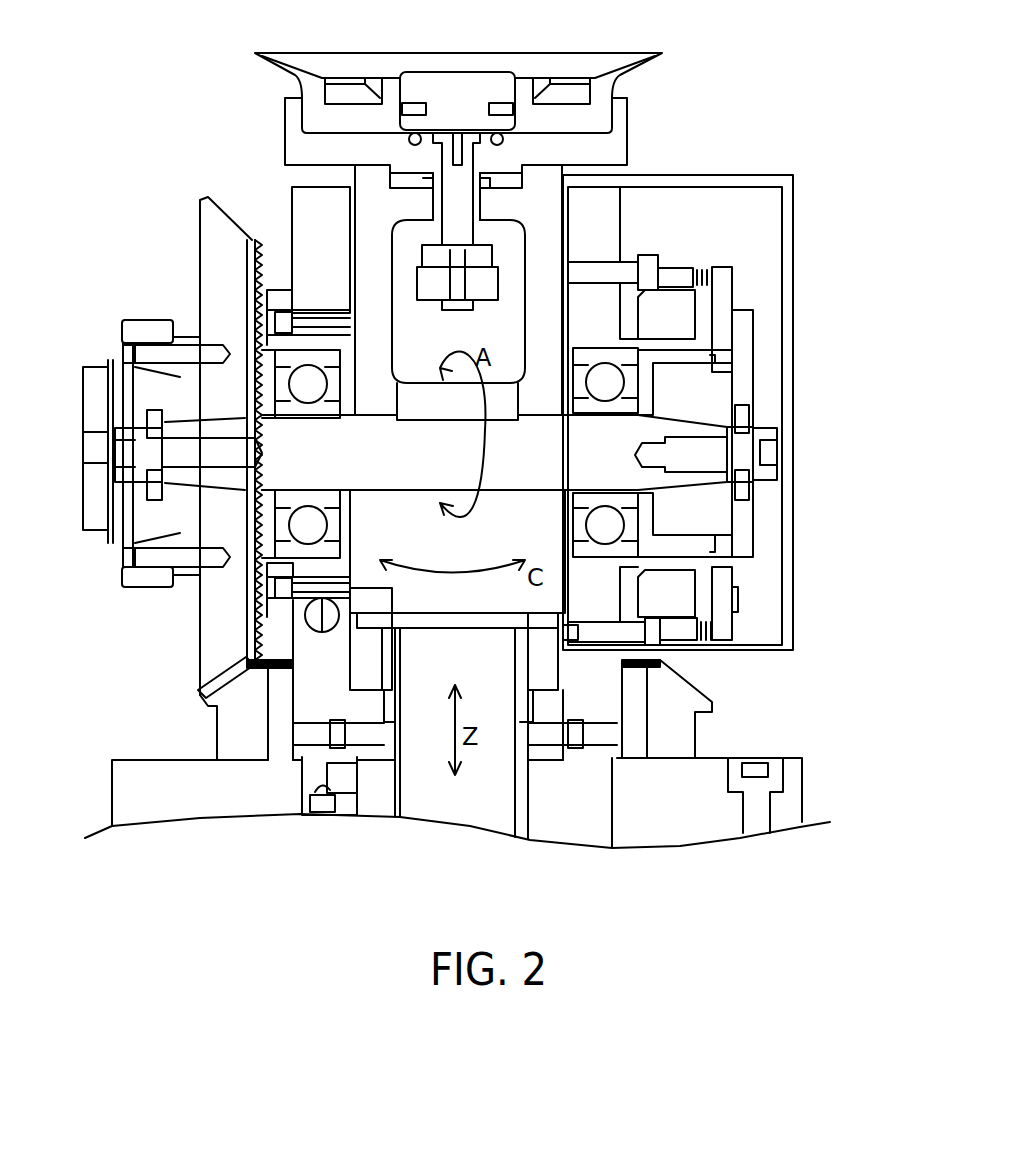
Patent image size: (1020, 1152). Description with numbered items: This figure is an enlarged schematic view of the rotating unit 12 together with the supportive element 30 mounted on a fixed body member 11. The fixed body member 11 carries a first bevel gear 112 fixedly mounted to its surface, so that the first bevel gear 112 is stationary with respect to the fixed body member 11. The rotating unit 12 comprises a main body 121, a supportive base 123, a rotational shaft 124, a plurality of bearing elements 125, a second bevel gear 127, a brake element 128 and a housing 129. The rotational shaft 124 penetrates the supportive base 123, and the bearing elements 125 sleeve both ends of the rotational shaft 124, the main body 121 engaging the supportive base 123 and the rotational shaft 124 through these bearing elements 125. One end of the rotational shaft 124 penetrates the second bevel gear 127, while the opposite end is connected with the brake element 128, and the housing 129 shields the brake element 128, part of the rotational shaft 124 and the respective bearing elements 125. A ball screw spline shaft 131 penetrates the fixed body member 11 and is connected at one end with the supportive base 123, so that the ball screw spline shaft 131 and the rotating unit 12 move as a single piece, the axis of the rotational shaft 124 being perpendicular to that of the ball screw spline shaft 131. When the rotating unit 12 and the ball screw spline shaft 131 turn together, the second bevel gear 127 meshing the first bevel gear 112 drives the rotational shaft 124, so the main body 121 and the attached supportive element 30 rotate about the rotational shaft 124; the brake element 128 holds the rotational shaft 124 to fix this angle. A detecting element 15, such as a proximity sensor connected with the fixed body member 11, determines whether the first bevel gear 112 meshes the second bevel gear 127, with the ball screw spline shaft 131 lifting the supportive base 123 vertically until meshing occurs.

The supportive element 30 is at (595, 62).
The main body 121 is at (535, 212).
The housing 129 is at (792, 240).
The rotating unit 12 is at (831, 304).
The bearing elements 125 is at (605, 382).
The rotational shaft 124 is at (605, 440).
The brake element 128 is at (712, 578).
The second bevel gear 127 is at (215, 618).
The first bevel gear 112 is at (250, 712).
The detecting element 15 is at (338, 775).
The fixed body member 11 is at (122, 797).
The supportive base 123 is at (590, 698).
The ball screw spline shaft 131 is at (523, 803).